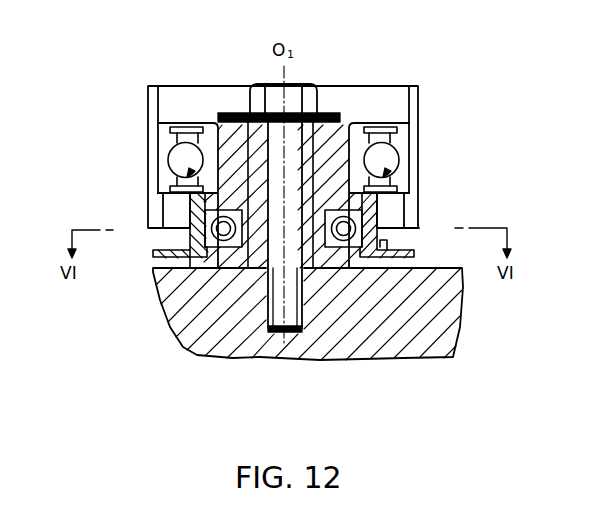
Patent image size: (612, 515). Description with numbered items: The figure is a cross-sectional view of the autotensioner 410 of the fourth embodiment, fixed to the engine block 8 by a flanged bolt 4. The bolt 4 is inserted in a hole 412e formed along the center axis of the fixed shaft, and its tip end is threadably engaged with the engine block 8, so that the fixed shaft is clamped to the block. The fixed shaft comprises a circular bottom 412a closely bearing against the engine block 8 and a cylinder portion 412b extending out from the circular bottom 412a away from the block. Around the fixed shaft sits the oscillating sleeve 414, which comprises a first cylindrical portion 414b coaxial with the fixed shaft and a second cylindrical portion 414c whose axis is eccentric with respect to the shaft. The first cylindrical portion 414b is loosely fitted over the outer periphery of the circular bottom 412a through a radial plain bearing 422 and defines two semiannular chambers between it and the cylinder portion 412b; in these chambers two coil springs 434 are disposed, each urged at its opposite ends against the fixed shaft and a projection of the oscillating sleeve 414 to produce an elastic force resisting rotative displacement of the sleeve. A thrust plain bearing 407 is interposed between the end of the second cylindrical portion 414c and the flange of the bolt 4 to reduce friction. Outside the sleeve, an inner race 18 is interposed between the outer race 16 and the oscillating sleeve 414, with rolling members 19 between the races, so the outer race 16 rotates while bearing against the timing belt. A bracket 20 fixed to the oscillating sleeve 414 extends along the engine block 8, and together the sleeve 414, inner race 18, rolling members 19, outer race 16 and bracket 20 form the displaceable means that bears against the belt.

The autotensioner 410 is at (256, 66).
The thrust plain bearing 407 is at (237, 112).
The flanged bolt 4 is at (288, 92).
The cylinder portion 412b is at (318, 110).
The second cylindrical portion 414c is at (162, 140).
The radial plain bearing 422 is at (160, 183).
The rolling members 19 is at (392, 152).
The outer race 16 is at (406, 160).
The inner race 18 is at (404, 182).
The first cylindrical portion 414b is at (388, 226).
The bracket 20 is at (412, 255).
The engine block 8 is at (456, 322).
The coil springs 434 is at (195, 270).
The circular bottom 412a is at (242, 250).
The hole 412e is at (292, 235).
The oscillating sleeve 414 is at (368, 242).